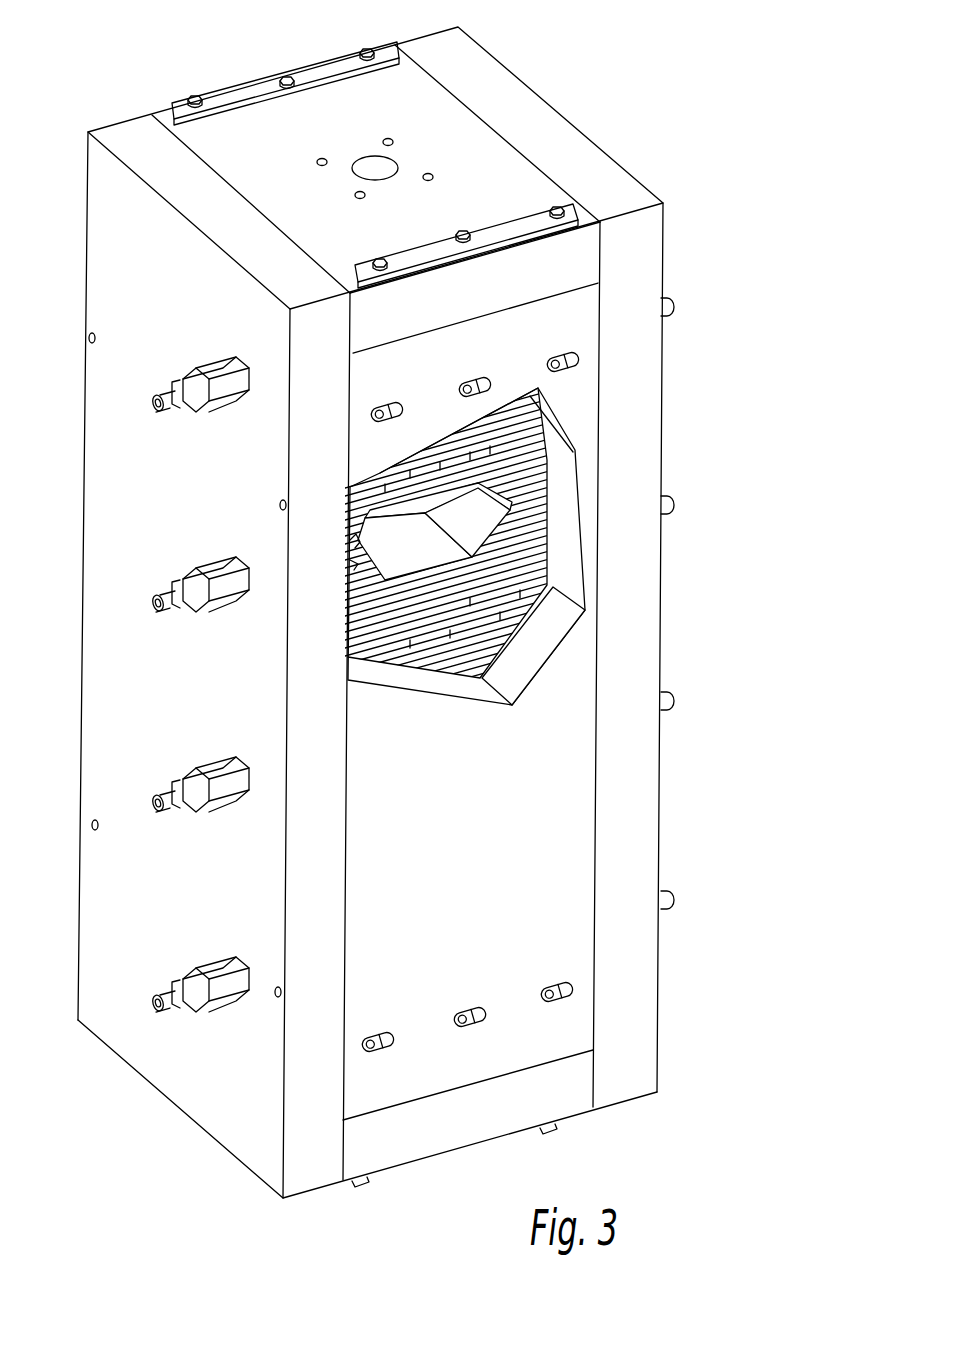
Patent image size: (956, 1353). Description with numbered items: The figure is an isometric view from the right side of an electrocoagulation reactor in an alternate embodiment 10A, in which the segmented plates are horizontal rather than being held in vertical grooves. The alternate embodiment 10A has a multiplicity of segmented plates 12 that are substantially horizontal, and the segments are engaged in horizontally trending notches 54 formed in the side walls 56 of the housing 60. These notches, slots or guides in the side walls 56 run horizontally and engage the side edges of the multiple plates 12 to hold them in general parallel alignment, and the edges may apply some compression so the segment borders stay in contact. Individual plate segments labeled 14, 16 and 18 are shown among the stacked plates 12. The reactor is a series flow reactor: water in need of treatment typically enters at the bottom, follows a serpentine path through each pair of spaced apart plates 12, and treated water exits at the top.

The alternate embodiment 10A is at (692, 110).
The segmented plates 12 is at (548, 455).
The end plate 14 is at (353, 563).
The first plate 16 is at (428, 561).
The second plate 18 is at (494, 540).
The horizontally trending notches 54 is at (552, 584).
The side walls 56 is at (522, 821).
The housing 60 is at (552, 700).